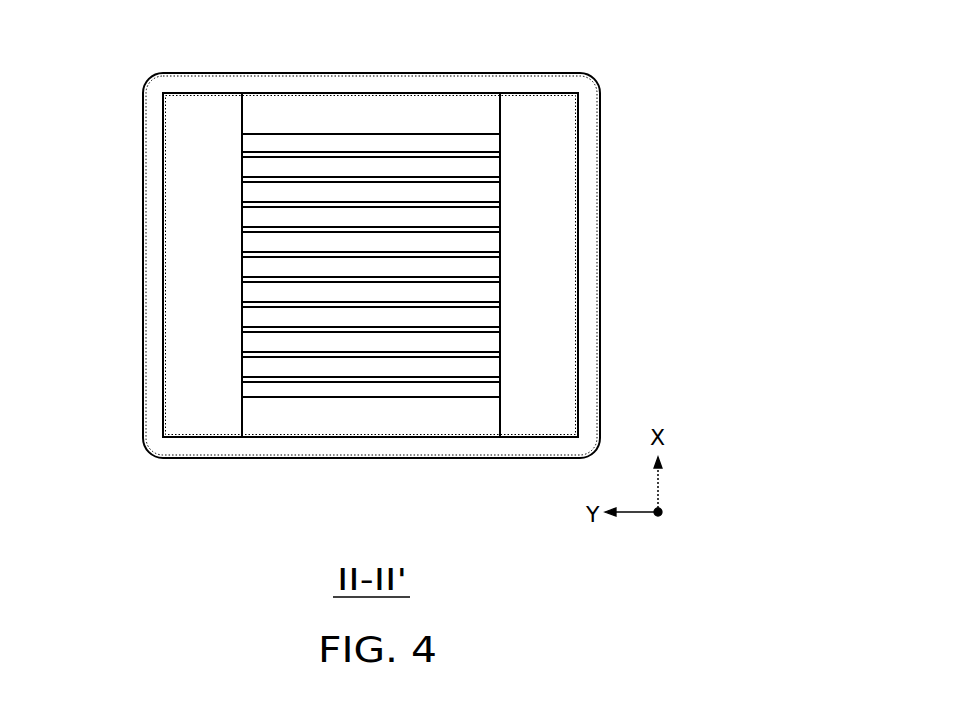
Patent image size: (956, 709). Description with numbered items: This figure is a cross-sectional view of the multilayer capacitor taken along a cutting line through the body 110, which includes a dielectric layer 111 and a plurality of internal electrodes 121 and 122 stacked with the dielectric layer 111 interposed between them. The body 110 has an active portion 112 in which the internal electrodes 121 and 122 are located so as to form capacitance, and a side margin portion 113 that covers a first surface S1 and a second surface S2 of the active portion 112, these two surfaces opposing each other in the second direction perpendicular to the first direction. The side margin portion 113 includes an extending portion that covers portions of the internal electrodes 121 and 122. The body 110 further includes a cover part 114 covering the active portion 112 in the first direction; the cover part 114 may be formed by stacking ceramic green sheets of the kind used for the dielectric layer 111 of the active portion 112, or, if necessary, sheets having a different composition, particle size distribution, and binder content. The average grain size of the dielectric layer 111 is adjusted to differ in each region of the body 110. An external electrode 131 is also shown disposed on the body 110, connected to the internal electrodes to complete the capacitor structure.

The body 110 is at (329, 93).
The dielectric layer 111 is at (470, 168).
The active portion 112 is at (242, 238).
The side margin portion 113 is at (198, 140).
The cover part 114 is at (450, 115).
The internal electrode 121 is at (288, 155).
The internal electrode 122 is at (382, 180).
The external electrode 131 is at (518, 83).
The first surface S1 is at (242, 260).
The second surface S2 is at (500, 259).